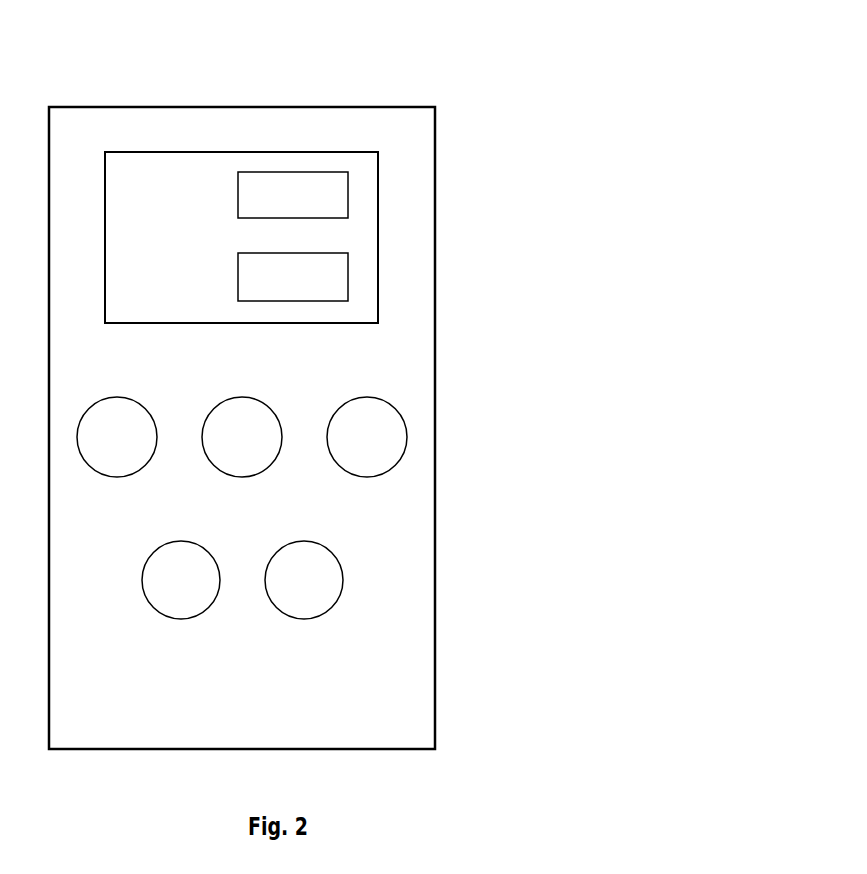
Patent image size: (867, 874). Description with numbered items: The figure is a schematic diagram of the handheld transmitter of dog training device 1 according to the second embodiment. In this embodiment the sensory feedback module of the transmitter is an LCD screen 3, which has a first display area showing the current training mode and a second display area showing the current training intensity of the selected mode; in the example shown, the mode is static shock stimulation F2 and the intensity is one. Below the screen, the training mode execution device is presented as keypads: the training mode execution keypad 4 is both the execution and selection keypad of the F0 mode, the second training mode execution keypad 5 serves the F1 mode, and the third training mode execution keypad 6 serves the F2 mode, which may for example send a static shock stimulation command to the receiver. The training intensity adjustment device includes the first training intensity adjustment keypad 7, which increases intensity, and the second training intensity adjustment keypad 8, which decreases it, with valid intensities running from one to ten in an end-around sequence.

The handheld transmitter of dog training device 1 is at (422, 98).
The LCD screen 3 is at (311, 237).
The training mode execution keypad 4 is at (367, 457).
The training mode execution keypad 5 is at (239, 455).
The training mode execution keypad 6 is at (117, 455).
The training intensity adjustment keypad 7 is at (304, 601).
The training intensity adjustment keypad 8 is at (178, 601).